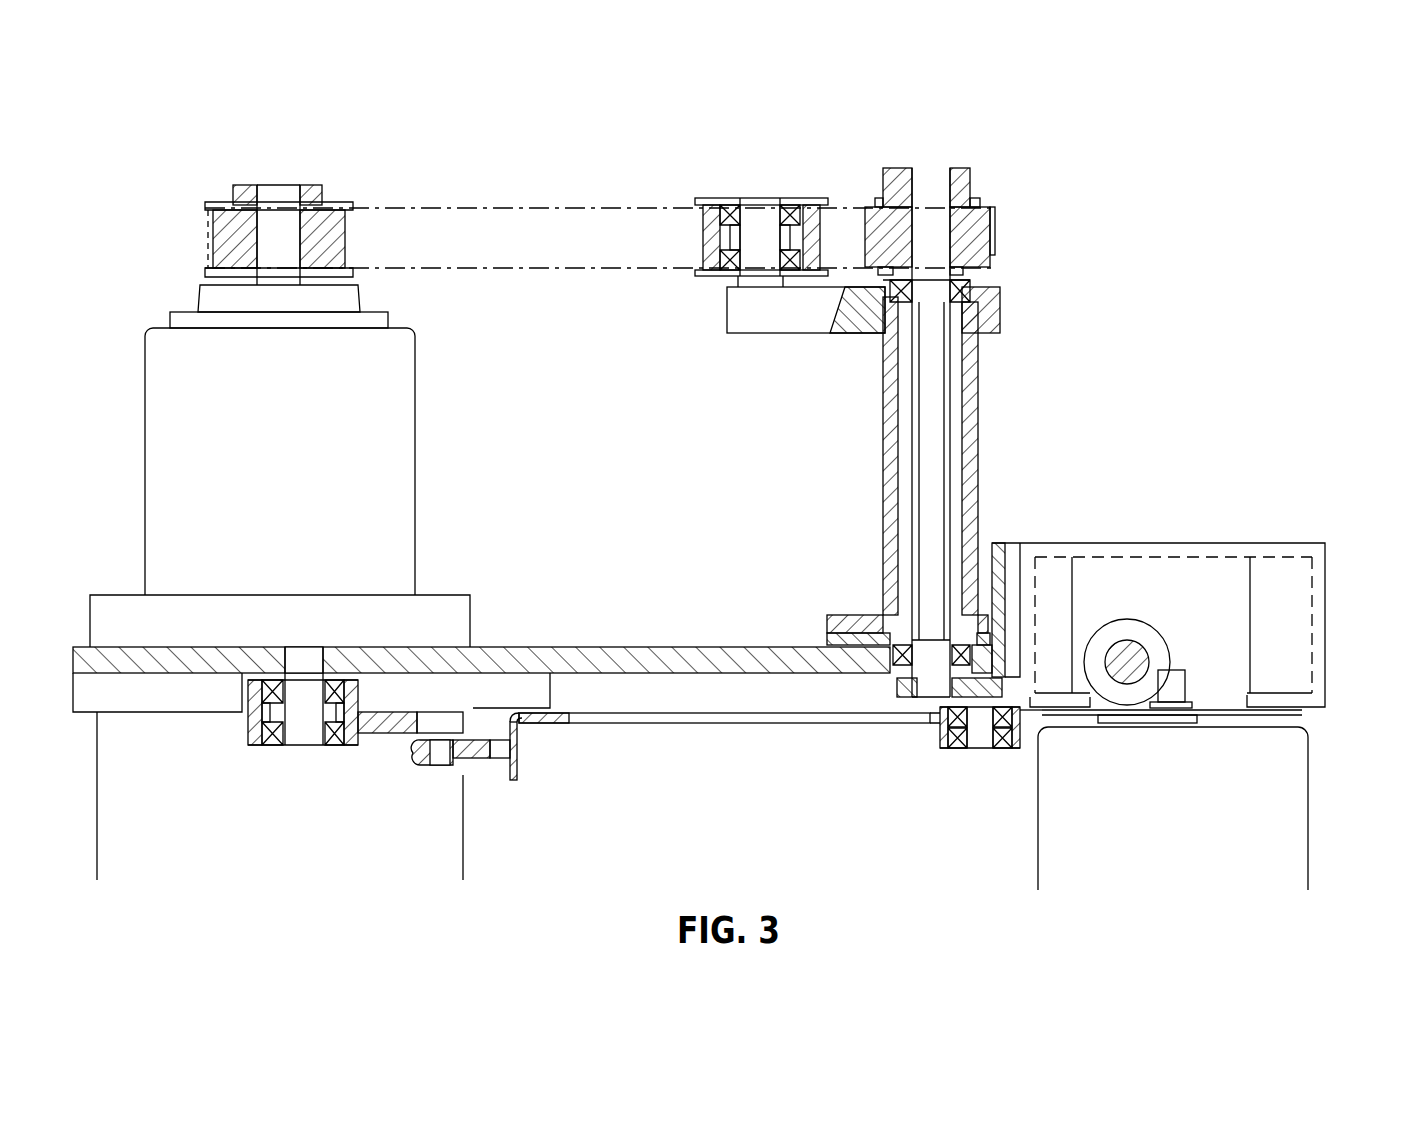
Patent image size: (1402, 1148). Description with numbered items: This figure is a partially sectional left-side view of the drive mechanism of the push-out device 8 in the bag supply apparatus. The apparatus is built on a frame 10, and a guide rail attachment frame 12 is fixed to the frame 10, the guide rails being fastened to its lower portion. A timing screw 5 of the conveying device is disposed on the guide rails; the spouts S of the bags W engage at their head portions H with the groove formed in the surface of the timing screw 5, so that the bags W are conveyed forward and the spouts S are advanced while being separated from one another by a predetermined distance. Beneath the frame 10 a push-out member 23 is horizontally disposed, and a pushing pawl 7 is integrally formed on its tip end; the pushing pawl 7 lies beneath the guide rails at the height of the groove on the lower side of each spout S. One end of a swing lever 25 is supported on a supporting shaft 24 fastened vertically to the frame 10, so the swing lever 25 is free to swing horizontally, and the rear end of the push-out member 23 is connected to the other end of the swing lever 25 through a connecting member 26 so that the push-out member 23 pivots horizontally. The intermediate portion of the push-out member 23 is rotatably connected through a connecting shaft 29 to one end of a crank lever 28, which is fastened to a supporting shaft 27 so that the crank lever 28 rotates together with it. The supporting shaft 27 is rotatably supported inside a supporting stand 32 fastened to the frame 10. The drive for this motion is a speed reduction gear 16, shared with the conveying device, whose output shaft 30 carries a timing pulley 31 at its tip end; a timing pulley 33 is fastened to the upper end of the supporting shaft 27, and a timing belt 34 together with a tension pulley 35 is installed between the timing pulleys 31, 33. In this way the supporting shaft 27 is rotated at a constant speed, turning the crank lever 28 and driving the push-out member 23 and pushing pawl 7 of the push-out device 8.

The speed reduction gear 16 is at (160, 412).
The output shaft 30 is at (276, 192).
The timing pulley 31 is at (328, 202).
The timing belt 34 is at (458, 216).
The tension pulley 35 is at (712, 200).
The timing pulley 33 is at (895, 184).
The supporting shaft 27 is at (932, 375).
The supporting stand 32 is at (972, 428).
The frame 10 is at (613, 648).
The supporting shaft 24 is at (300, 735).
The swing lever 25 is at (387, 722).
The connecting member 26 is at (482, 758).
The push-out member 23 is at (678, 723).
The crank lever 28 is at (900, 697).
The connecting shaft 29 is at (983, 748).
The guide rail attachment frame 12 is at (1216, 548).
The timing screw 5 is at (1131, 622).
The spout S is at (1186, 662).
The head portion H is at (1178, 690).
The pushing pawl 7 is at (1127, 716).
The bag W is at (1298, 793).
The push-out device 8 is at (908, 840).